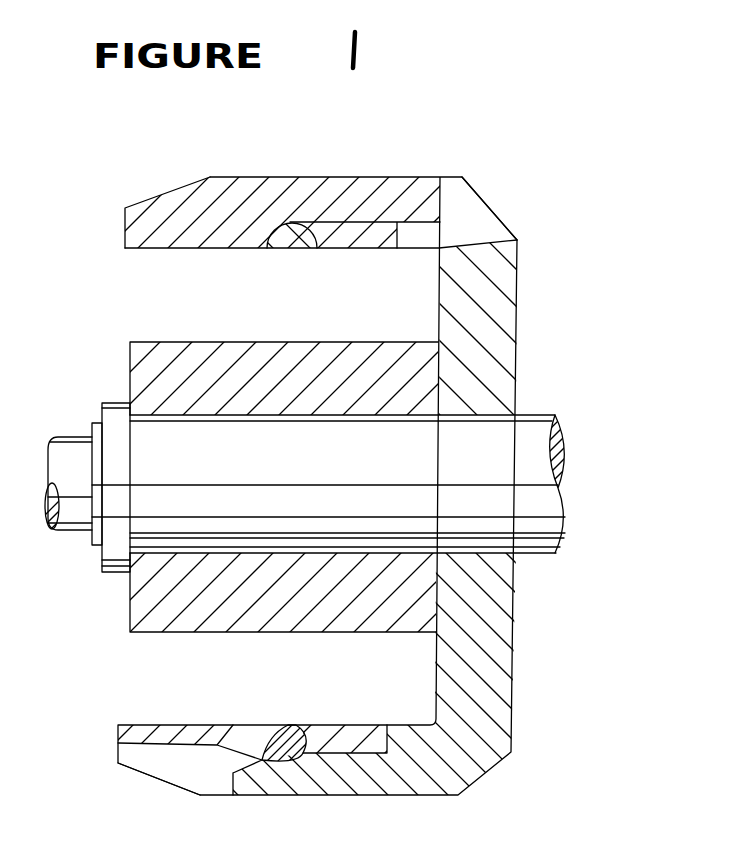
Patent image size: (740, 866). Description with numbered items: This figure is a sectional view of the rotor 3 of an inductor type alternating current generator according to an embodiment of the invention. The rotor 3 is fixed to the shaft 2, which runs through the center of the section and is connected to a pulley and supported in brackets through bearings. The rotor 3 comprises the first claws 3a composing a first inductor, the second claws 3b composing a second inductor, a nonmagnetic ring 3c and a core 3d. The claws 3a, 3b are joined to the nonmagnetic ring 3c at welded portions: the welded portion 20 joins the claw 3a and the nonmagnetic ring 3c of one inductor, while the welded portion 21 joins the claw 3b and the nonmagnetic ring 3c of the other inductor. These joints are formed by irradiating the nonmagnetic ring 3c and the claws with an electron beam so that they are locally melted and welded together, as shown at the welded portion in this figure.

The shaft 2 is at (505, 453).
The rotor 3 is at (523, 323).
The first claws 3a is at (493, 212).
The second claws 3b is at (252, 177).
The nonmagnetic ring 3c is at (350, 222).
The core 3d is at (204, 380).
The welding portion 20 is at (288, 737).
The welding portion 21 is at (288, 248).